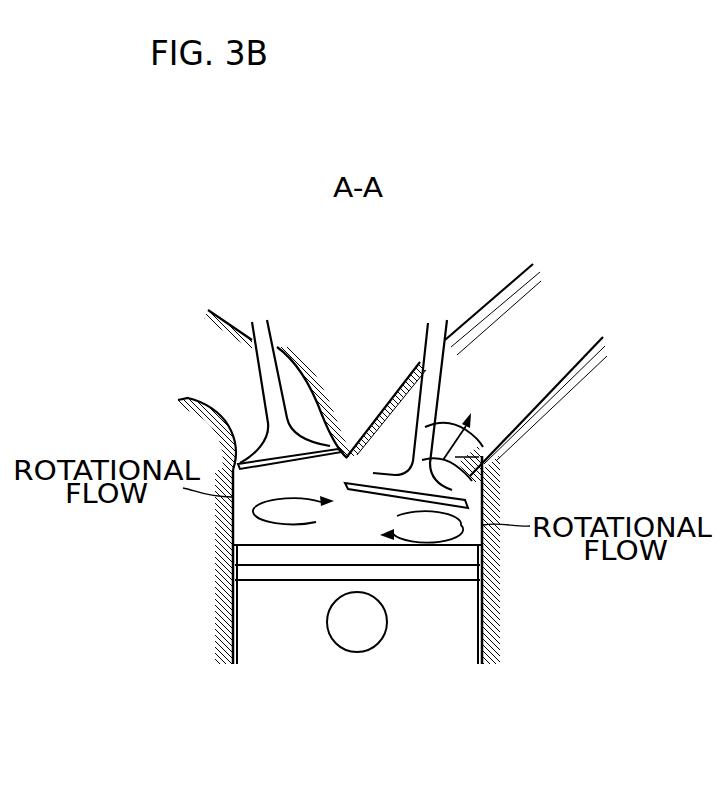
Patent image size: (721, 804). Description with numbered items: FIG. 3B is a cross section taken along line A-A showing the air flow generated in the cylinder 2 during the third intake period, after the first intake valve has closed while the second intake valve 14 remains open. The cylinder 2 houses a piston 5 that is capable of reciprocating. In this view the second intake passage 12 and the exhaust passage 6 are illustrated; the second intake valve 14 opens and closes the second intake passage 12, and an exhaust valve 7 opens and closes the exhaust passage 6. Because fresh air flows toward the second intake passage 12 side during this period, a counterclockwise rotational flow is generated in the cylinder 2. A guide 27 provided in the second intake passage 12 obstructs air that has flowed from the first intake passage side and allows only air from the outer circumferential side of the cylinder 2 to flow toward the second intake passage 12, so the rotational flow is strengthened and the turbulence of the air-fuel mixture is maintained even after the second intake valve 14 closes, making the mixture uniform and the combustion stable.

The cylinder 2 is at (232, 527).
The piston 5 is at (457, 607).
The exhaust passage 6 is at (213, 414).
The exhaust valve 7 is at (273, 375).
The second intake passage 12 is at (527, 373).
The second intake valve 14 is at (408, 382).
The guide 27 is at (487, 455).